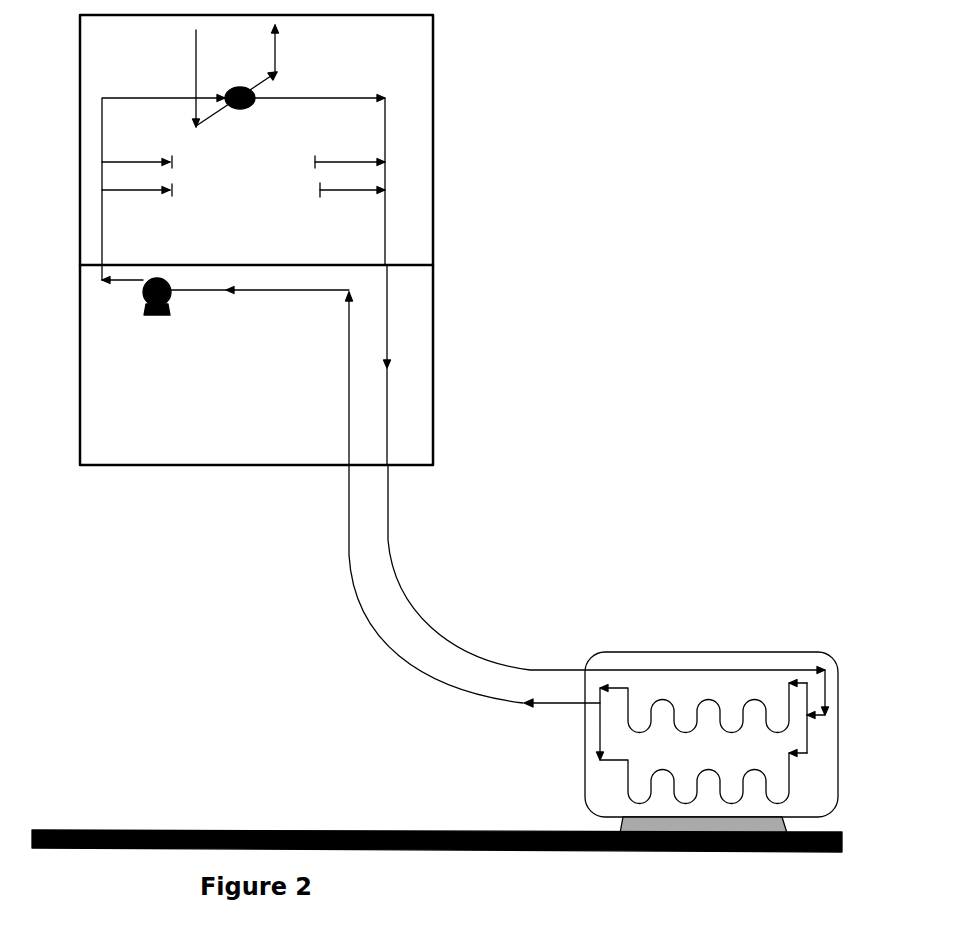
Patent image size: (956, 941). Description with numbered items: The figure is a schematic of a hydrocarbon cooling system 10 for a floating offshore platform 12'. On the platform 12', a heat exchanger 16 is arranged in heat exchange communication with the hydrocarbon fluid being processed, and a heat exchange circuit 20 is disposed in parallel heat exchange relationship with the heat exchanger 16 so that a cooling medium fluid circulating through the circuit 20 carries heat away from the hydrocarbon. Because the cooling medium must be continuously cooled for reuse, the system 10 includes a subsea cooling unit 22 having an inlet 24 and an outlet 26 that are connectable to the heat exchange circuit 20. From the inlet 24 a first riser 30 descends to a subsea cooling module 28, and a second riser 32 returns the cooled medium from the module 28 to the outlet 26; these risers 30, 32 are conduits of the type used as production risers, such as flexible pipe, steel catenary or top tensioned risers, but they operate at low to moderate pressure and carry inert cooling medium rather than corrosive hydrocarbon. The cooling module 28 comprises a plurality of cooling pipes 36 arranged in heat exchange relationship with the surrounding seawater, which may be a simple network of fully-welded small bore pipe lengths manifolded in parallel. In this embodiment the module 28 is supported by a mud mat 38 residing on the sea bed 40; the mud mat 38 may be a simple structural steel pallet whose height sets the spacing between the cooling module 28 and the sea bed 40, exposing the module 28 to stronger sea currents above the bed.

The hydrocarbon cooling system 10 is at (712, 628).
The floating offshore platform 12' is at (290, 240).
The heat exchanger 16 is at (240, 87).
The heat exchange circuit 20 is at (102, 232).
The subsea cooling unit 22 is at (494, 548).
The inlet 24 is at (404, 281).
The outlet 26 is at (349, 293).
The subsea cooling module 28 is at (772, 655).
The first riser 30 is at (398, 550).
The second riser 32 is at (358, 567).
The cooling pipes 36 is at (712, 700).
The mud mat 38 is at (620, 825).
The sea bed 40 is at (338, 833).